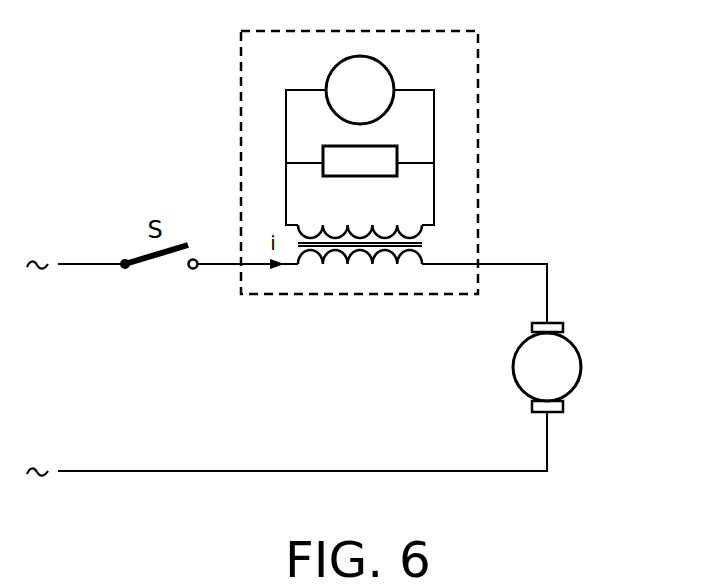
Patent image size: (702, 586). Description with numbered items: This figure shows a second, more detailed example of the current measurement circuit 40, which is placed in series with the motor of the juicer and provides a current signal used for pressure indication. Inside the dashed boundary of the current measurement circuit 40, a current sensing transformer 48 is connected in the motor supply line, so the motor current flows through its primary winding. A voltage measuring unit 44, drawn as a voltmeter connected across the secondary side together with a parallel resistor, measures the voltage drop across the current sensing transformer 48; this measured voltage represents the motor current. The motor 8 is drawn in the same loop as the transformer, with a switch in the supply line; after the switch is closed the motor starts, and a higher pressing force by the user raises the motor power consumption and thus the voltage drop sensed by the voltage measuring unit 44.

The current measurement circuit 40 is at (478, 62).
The voltage measuring unit 44 is at (387, 58).
The current sensing transformer 48 is at (325, 272).
The motor 8 is at (580, 365).